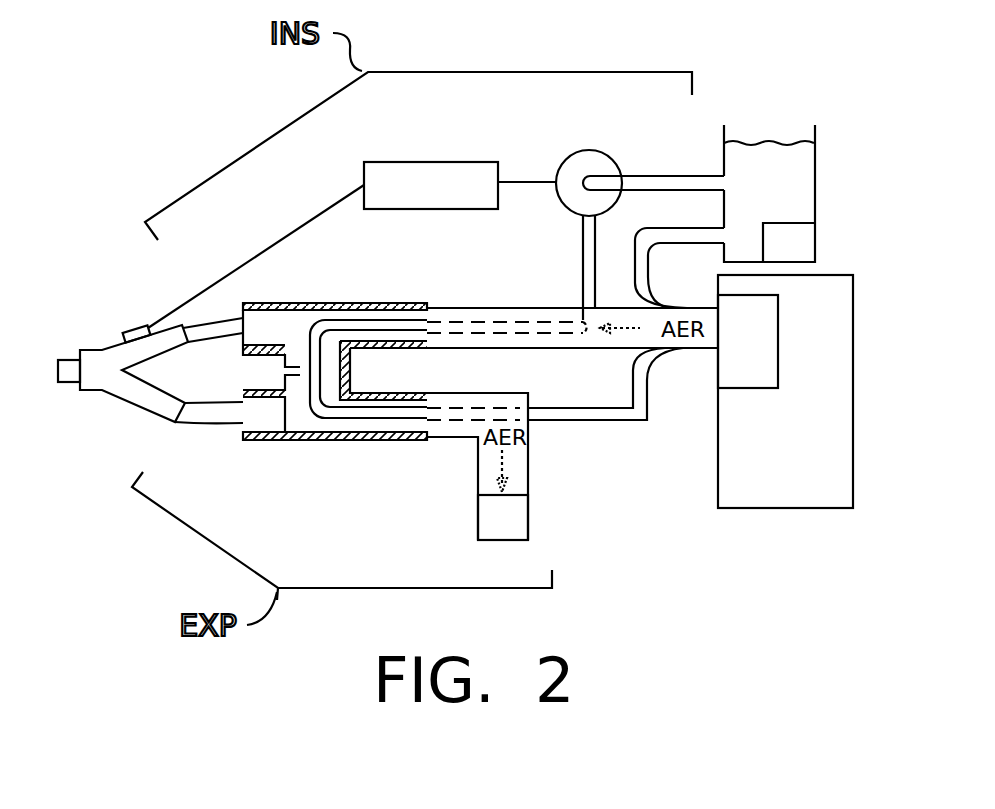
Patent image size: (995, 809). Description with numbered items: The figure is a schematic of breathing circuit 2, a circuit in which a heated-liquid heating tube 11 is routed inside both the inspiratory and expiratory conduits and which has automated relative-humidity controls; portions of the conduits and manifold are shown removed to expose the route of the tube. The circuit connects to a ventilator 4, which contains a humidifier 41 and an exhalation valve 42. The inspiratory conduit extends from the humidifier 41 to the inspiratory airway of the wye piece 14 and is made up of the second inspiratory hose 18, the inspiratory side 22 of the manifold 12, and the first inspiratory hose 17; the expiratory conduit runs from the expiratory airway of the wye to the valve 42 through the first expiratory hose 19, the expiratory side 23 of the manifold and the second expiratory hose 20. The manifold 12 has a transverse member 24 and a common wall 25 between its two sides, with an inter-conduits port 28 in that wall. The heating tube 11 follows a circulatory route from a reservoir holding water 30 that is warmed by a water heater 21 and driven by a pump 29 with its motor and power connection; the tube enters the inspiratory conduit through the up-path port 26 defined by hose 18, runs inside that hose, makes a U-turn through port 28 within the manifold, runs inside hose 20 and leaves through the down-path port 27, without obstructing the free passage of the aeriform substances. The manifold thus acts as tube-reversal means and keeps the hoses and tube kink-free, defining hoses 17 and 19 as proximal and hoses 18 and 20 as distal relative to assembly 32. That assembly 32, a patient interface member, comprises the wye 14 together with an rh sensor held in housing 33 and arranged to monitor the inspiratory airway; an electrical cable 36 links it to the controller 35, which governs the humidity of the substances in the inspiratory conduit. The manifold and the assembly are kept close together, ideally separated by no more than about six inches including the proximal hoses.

The breathing circuit with a heating tube and automated rh controls 2 is at (151, 548).
The ventilator 4 is at (779, 450).
The heated-liquid heating tube 11 is at (342, 302).
The manifold 12 is at (253, 427).
The wye piece 14 is at (128, 402).
The first inspiratory hose 17 is at (222, 348).
The second inspiratory hose 18 is at (458, 306).
The first expiratory hose 19 is at (210, 424).
The second expiratory hose 20 is at (478, 473).
The water heater 21 is at (700, 237).
The inspiratory side of manifold 22 is at (375, 302).
The expiratory side of manifold 23 is at (375, 440).
The transverse member of manifold 24 is at (282, 366).
The common wall of manifold 25 is at (310, 440).
The first or up-path port 26 is at (573, 300).
The second or down-path port 27 is at (537, 446).
The third or inter-conduits port 28 is at (293, 335).
The pump 29 is at (580, 150).
The water 30 is at (736, 176).
The assembly comprising wye and sensor 32 is at (136, 435).
The housing for sensor 33 is at (140, 326).
The controller 35 is at (413, 202).
The electrical cable 36 is at (282, 238).
The humidifier 41 is at (729, 355).
The exhalation valve 42 is at (488, 537).